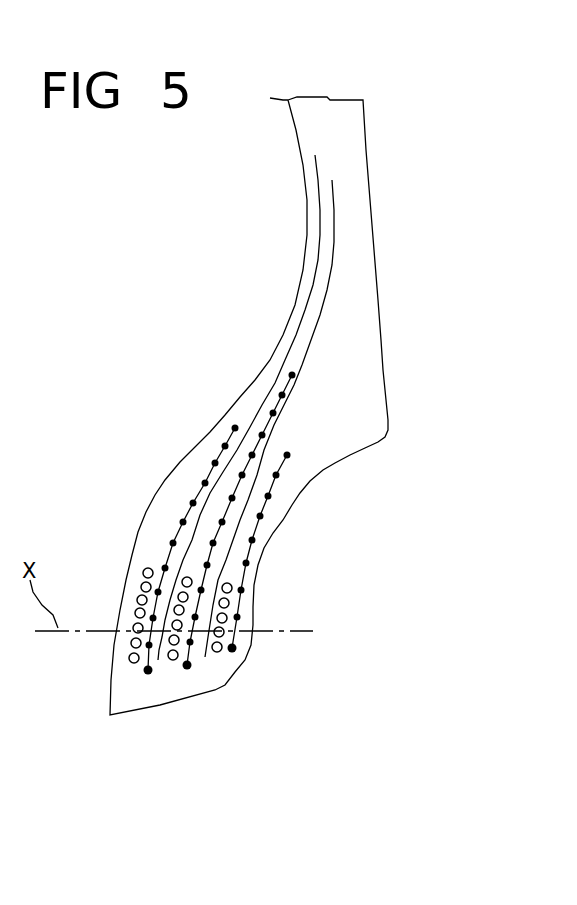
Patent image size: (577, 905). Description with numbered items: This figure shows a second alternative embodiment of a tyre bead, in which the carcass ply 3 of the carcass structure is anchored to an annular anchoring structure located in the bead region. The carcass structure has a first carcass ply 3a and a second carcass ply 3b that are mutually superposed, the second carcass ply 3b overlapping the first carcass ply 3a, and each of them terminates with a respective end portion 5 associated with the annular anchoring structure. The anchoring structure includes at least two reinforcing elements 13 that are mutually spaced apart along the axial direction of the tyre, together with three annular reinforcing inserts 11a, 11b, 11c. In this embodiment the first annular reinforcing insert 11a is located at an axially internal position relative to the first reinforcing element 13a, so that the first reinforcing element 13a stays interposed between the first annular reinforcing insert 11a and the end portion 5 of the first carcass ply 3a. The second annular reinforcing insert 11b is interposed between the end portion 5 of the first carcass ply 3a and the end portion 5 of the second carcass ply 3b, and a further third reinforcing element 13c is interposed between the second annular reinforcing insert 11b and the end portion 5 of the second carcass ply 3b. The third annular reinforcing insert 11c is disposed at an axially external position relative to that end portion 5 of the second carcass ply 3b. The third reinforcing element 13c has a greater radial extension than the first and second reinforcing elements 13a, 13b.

The carcass ply 3 is at (414, 169).
The first carcass ply 3a is at (239, 407).
The second carcass ply 3b is at (348, 418).
The end portion 5 is at (226, 728).
The first annular reinforcing insert 11a is at (78, 639).
The second annular reinforcing insert 11b is at (205, 687).
The third annular reinforcing insert 11c is at (294, 646).
The reinforcing element 13 is at (310, 449).
The first reinforcing element 13a is at (130, 550).
The second reinforcing element 13b is at (318, 552).
The third reinforcing element 13c is at (326, 521).